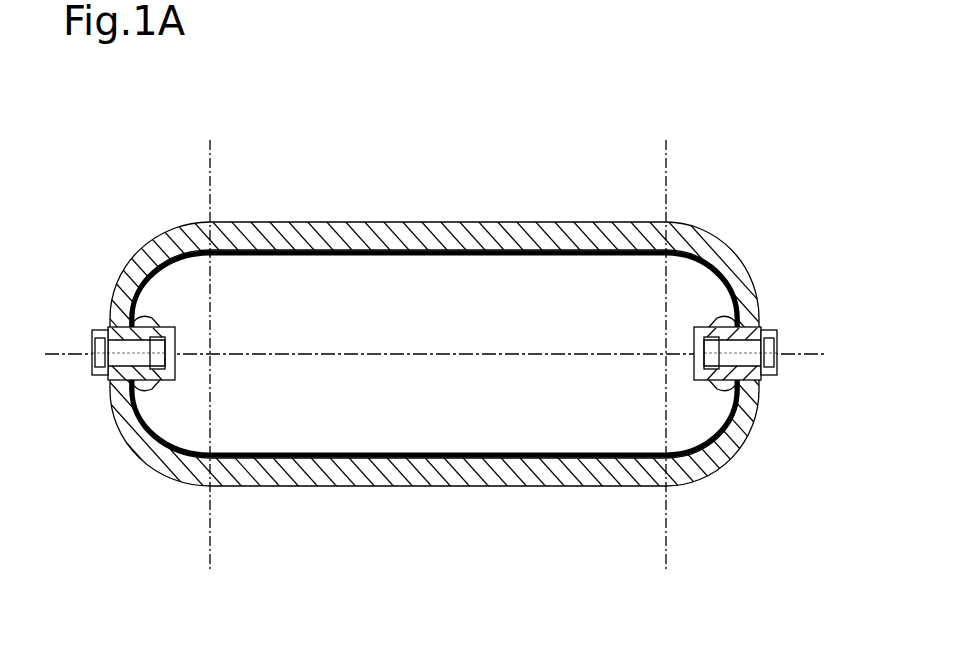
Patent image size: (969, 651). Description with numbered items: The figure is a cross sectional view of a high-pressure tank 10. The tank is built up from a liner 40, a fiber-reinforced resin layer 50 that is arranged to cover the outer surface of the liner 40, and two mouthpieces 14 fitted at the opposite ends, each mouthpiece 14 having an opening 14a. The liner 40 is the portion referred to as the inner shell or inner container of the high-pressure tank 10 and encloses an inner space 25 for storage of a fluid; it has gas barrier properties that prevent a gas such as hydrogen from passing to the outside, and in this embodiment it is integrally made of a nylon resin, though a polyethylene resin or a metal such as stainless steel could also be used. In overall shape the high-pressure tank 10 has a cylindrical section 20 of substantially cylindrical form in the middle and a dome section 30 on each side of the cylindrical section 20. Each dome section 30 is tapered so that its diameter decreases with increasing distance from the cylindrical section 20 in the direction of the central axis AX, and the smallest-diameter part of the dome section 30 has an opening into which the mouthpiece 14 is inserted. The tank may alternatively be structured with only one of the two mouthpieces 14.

The high-pressure tank 10 is at (719, 120).
The mouthpiece 14 is at (165, 328).
The opening 14a is at (178, 366).
The cylindrical section 20 is at (666, 172).
The inner space 25 is at (448, 396).
The dome section 30 is at (82, 332).
The liner 40 is at (436, 257).
The fiber-reinforced resin layer 50 is at (312, 248).
The central axis AX is at (562, 351).